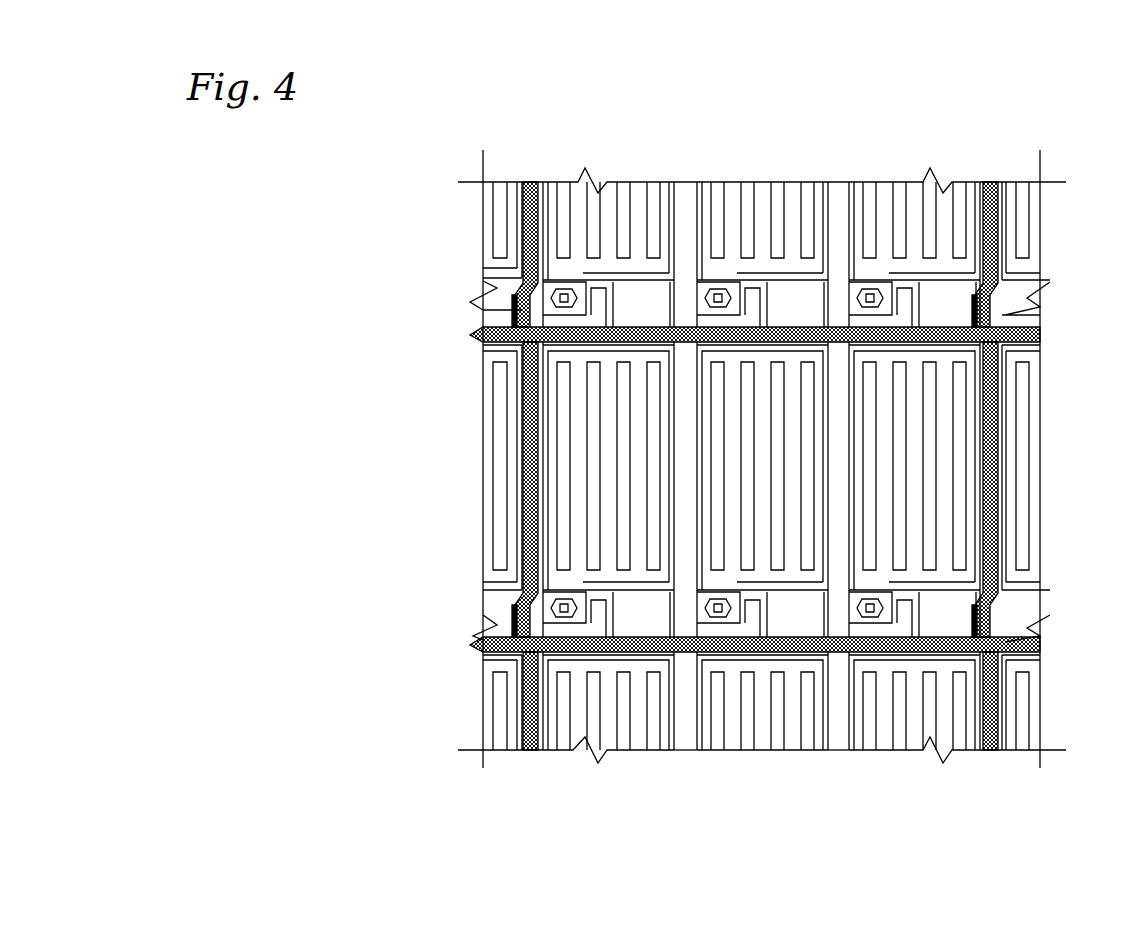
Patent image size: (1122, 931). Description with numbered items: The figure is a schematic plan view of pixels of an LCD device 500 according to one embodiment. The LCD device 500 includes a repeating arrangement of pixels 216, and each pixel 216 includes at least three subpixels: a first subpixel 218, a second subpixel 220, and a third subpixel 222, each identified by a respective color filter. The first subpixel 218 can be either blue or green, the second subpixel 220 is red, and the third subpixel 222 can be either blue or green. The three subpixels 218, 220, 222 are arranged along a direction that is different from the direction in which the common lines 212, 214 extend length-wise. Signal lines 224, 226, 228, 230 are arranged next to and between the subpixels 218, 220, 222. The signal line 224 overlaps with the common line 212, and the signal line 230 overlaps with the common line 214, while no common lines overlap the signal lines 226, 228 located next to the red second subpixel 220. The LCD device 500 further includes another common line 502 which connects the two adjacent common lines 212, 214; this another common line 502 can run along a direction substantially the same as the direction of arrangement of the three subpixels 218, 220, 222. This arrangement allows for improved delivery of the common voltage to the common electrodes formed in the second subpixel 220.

The LCD device 500 is at (401, 166).
The another common line 502 is at (1042, 333).
The common line 212 is at (533, 750).
The common line 214 is at (989, 750).
The pixel 216 is at (543, 97).
The first subpixel 218 is at (543, 157).
The second subpixel 220 is at (697, 157).
The third subpixel 222 is at (849, 157).
The signal line 224 is at (535, 622).
The signal line 226 is at (687, 740).
The signal line 228 is at (838, 740).
The signal line 230 is at (992, 617).